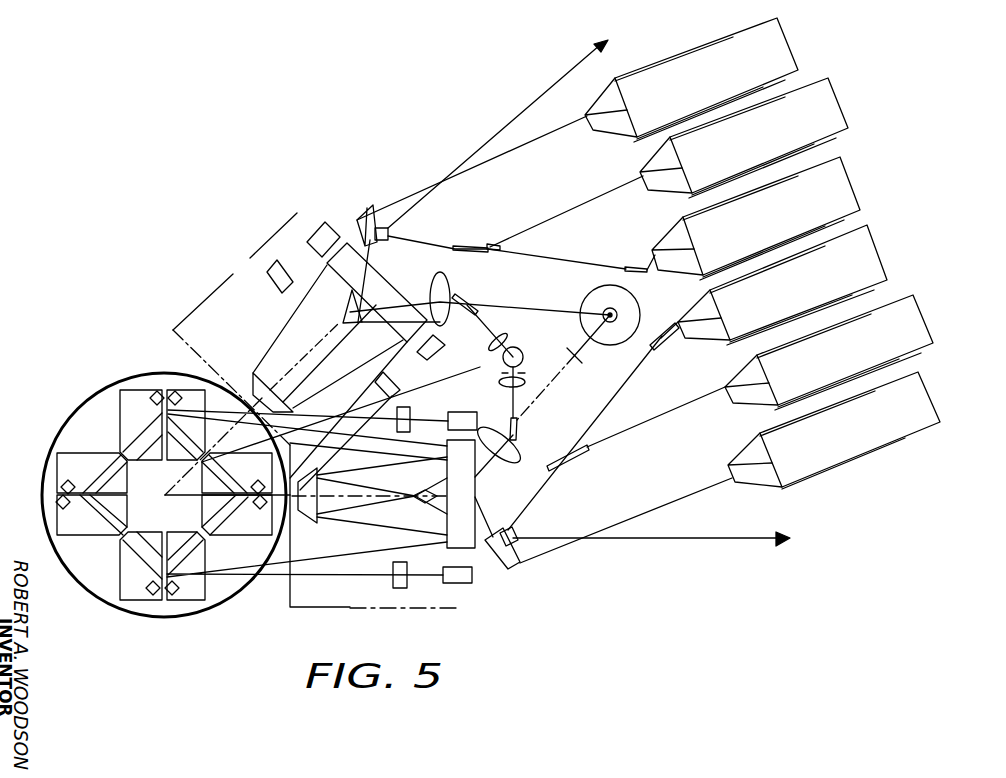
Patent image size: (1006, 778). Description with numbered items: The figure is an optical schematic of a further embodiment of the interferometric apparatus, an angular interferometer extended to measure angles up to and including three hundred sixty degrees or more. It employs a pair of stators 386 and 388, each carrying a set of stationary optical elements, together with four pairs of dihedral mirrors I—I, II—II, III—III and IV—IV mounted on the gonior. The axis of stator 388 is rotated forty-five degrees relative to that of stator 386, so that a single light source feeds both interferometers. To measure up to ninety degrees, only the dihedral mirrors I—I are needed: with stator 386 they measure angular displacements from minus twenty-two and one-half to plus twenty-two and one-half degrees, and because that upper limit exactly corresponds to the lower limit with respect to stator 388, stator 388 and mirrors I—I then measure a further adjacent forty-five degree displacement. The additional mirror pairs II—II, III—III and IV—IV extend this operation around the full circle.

The stator 388 is at (233, 276).
The stator 386 is at (345, 612).
The dihedral mirrors I— I is at (185, 495).
The dihedral mirrors II— II is at (164, 515).
The dihedral mirrors III— III is at (142, 495).
The dihedral mirrors IV— IV is at (164, 473).